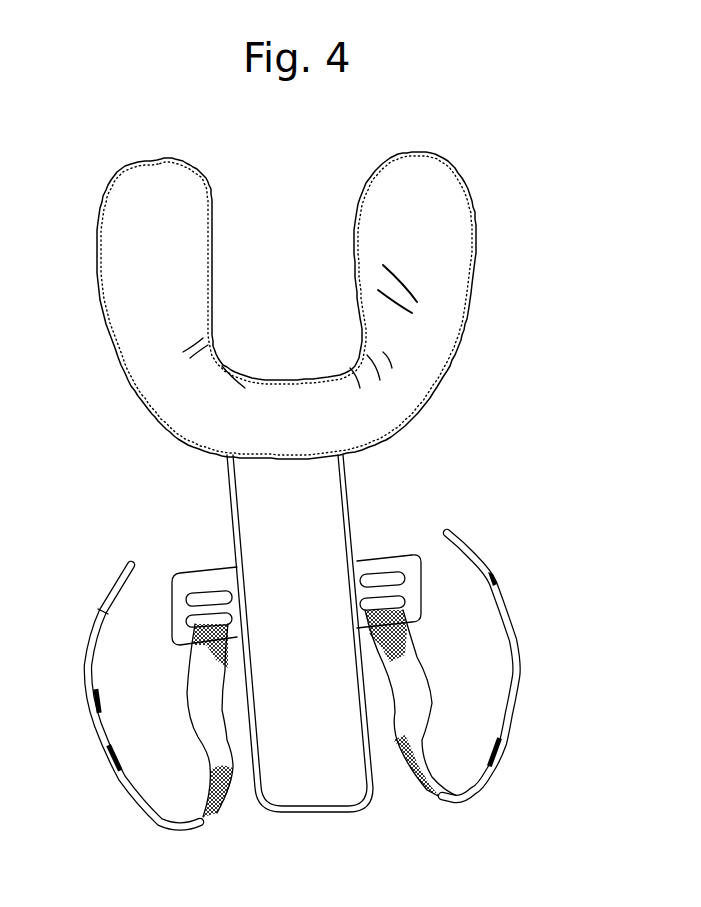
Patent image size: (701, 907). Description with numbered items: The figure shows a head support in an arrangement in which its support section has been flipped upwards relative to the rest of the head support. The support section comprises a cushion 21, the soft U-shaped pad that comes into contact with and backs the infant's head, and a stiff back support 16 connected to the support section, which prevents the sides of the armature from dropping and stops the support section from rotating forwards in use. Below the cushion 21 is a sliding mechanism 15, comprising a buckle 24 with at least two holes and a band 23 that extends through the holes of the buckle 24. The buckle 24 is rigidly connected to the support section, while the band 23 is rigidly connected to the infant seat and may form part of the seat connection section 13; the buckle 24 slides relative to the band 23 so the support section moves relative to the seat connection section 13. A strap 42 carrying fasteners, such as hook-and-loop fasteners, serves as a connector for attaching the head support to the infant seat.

The seat connection section 13 is at (428, 538).
The sliding mechanism 15 is at (183, 568).
The stiff back support 16 is at (318, 780).
The cushion 21 is at (427, 178).
The band 23 is at (487, 783).
The buckle 24 is at (383, 562).
The strap 42 is at (116, 590).